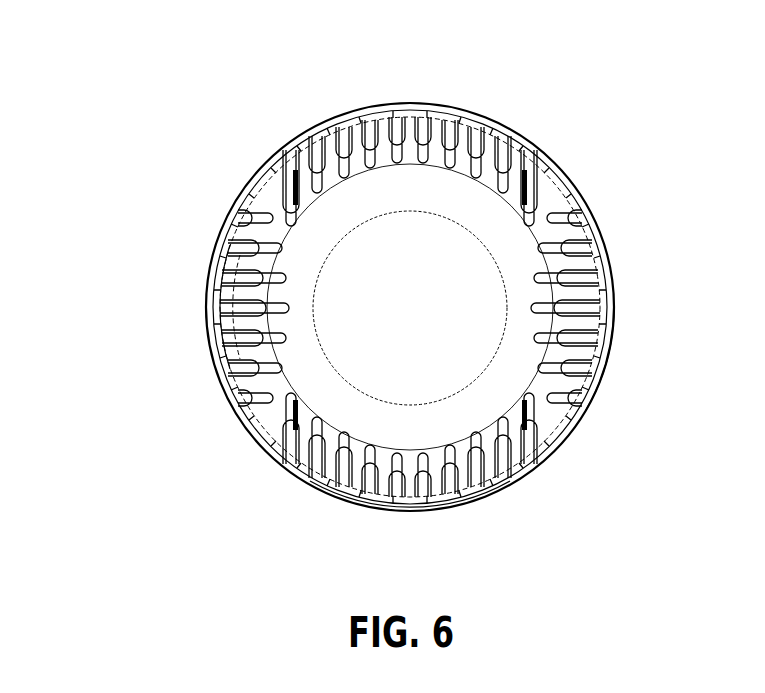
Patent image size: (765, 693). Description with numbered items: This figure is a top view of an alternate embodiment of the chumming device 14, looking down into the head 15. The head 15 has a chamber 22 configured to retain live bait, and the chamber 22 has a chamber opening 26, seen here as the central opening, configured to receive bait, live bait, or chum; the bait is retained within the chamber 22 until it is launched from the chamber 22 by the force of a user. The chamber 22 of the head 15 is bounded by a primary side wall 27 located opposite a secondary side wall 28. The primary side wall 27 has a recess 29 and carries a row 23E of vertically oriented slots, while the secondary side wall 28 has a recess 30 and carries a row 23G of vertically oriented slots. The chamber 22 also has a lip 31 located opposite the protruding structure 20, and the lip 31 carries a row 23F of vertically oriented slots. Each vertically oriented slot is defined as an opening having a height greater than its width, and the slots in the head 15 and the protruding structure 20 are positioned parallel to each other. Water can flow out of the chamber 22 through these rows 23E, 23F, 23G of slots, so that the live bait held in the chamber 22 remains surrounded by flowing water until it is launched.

The chumming device 14 is at (213, 157).
The head 15 is at (577, 185).
The protruding structure 20 is at (418, 507).
The chamber 22 is at (300, 247).
The row of vertically oriented slots 23E is at (586, 275).
The row of vertically oriented slots 23F is at (448, 135).
The row of vertically oriented slots 23G is at (243, 368).
The chamber opening 26 is at (305, 289).
The primary side wall 27 is at (598, 338).
The secondary side wall 28 is at (213, 330).
The recess 29 is at (606, 316).
The recess 30 is at (213, 312).
The lip 31 is at (417, 113).